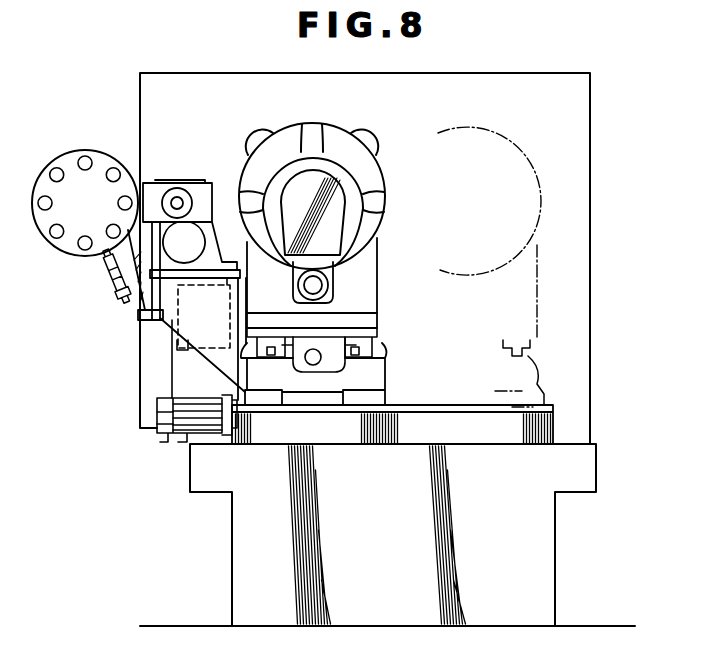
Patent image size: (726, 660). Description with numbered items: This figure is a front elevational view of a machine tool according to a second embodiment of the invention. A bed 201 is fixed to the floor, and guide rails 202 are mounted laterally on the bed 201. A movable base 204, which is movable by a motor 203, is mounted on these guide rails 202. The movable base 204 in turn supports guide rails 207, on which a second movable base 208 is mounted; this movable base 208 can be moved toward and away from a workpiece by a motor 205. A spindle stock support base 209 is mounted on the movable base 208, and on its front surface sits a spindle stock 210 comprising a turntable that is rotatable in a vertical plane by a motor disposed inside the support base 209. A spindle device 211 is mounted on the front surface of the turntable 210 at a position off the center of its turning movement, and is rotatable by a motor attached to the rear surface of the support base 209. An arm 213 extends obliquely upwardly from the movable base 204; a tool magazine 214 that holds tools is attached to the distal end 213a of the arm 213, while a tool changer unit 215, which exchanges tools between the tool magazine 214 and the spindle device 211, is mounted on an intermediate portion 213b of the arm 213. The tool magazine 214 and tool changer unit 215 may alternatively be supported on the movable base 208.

The bed 201 is at (533, 565).
The guide rails 202 is at (553, 410).
The motor 203 is at (198, 412).
The movable base 204 is at (385, 372).
The motor 205 is at (324, 364).
The guide rails 207 is at (503, 342).
The movable base 208 is at (378, 320).
The spindle stock support base 209 is at (378, 294).
The spindle stock 210 is at (330, 132).
The spindle device 211 is at (318, 280).
The arm 213 is at (206, 366).
The distal end 213a is at (127, 268).
The intermediate portion 213b is at (172, 320).
The tool magazine 214 is at (74, 228).
The tool changer unit 215 is at (158, 192).